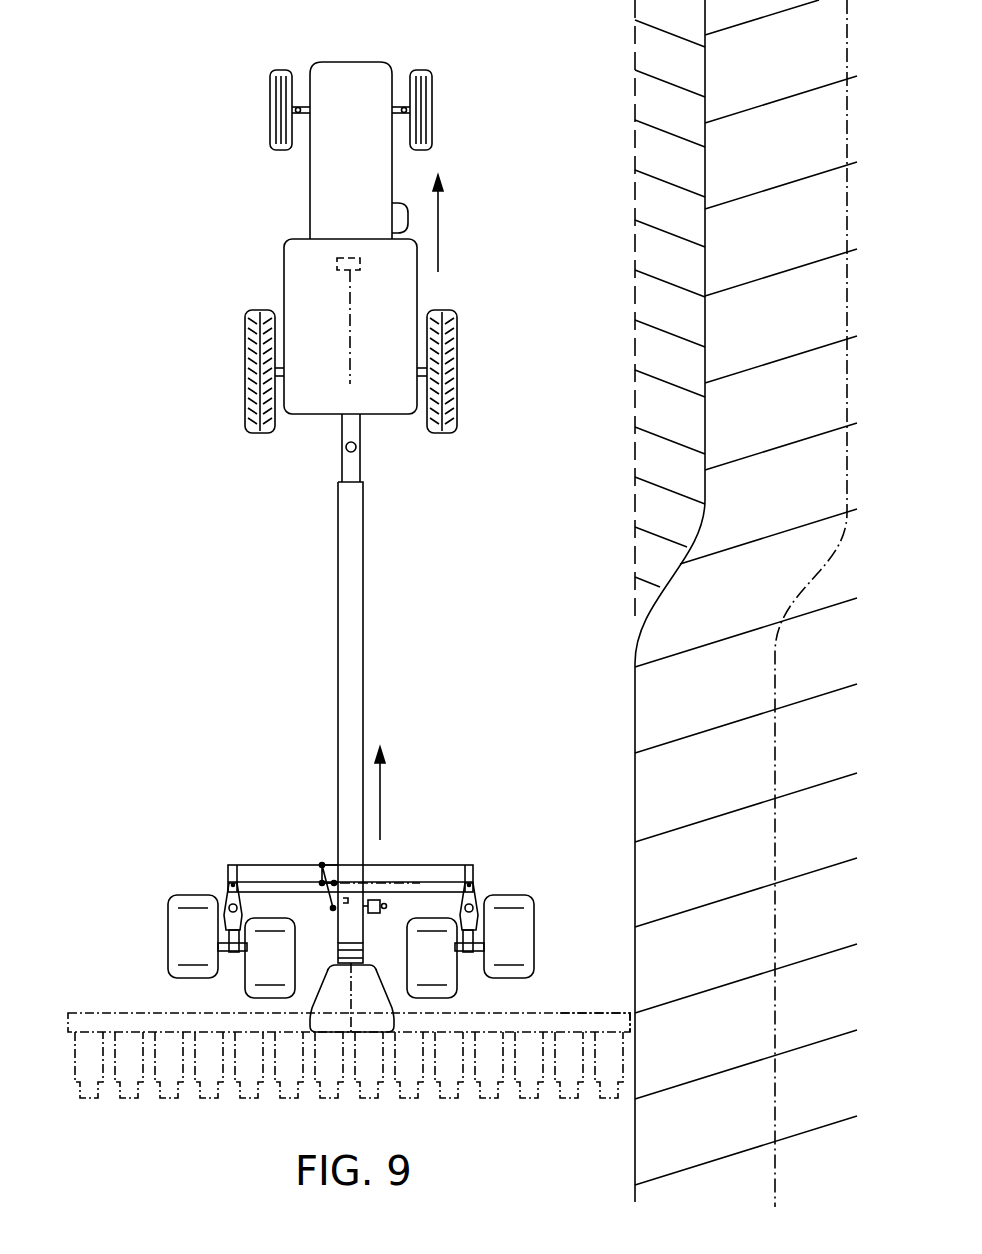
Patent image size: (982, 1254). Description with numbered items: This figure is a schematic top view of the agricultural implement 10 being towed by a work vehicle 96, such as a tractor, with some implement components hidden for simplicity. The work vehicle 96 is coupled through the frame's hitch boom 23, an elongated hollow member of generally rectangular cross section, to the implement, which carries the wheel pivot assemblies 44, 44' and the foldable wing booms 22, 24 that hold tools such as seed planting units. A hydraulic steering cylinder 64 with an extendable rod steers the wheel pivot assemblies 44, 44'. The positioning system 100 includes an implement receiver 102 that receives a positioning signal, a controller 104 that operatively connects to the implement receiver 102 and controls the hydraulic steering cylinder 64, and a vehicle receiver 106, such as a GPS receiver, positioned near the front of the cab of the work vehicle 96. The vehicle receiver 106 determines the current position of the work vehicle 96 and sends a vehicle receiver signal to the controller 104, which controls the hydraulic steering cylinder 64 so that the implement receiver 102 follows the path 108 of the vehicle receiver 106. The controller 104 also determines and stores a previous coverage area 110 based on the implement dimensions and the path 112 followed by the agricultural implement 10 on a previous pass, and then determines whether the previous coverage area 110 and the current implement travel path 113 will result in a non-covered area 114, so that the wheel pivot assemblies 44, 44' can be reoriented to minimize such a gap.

The agricultural implement 10 is at (412, 697).
The foldable wing boom 22 is at (108, 1013).
The hitch boom 23 is at (352, 586).
The foldable wing boom 24 is at (580, 1015).
The wheel pivot assembly 44 is at (231, 905).
The wheel pivot assembly 44' is at (470, 915).
The hydraulic steering cylinder 64 is at (372, 900).
The work vehicle 96 is at (353, 272).
The positioning system 100 is at (345, 965).
The implement receiver 102 is at (358, 958).
The controller 104 is at (342, 965).
The vehicle receiver 106 is at (361, 263).
The path 108 is at (350, 382).
The previous coverage area 110 is at (709, 715).
The path 112 is at (775, 787).
The current implement travel path 113 is at (355, 991).
The non-covered area 114 is at (683, 427).